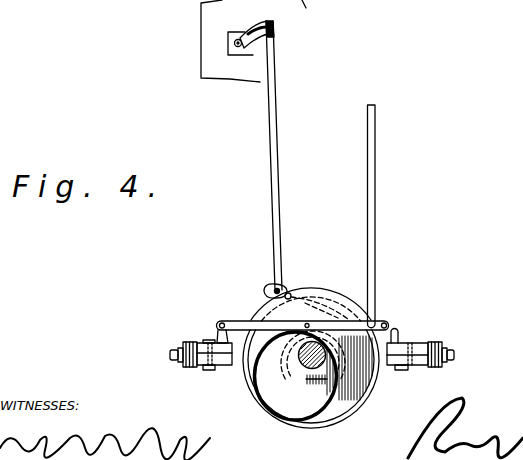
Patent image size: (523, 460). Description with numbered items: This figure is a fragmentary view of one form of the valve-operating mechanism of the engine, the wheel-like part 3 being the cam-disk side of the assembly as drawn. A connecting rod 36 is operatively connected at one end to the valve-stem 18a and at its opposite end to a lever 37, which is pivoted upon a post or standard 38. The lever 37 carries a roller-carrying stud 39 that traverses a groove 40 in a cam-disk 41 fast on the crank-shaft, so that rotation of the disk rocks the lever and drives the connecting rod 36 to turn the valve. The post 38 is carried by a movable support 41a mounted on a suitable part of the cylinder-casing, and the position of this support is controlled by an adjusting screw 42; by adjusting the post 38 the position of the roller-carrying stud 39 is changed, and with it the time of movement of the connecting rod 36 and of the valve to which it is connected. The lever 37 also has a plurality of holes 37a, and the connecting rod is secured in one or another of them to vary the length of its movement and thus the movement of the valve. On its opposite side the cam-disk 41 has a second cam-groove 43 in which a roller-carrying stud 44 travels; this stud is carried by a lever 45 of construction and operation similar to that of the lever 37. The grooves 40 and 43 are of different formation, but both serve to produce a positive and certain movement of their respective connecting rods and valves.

The valve-stem 18a is at (234, 47).
The connecting rod 36 is at (279, 171).
The lever 37 is at (282, 289).
The holes 37a is at (311, 289).
The roller-carrying stud 39 is at (341, 309).
The lever 45 is at (231, 320).
The roller-carrying stud 44 is at (290, 340).
The wheel 3 is at (310, 358).
The cam-groove 43 is at (310, 414).
The cam-disk 41 is at (358, 397).
The post or standard 38 is at (402, 342).
The groove 40 is at (383, 374).
The movable support 41a is at (430, 344).
The screw 42 is at (454, 356).